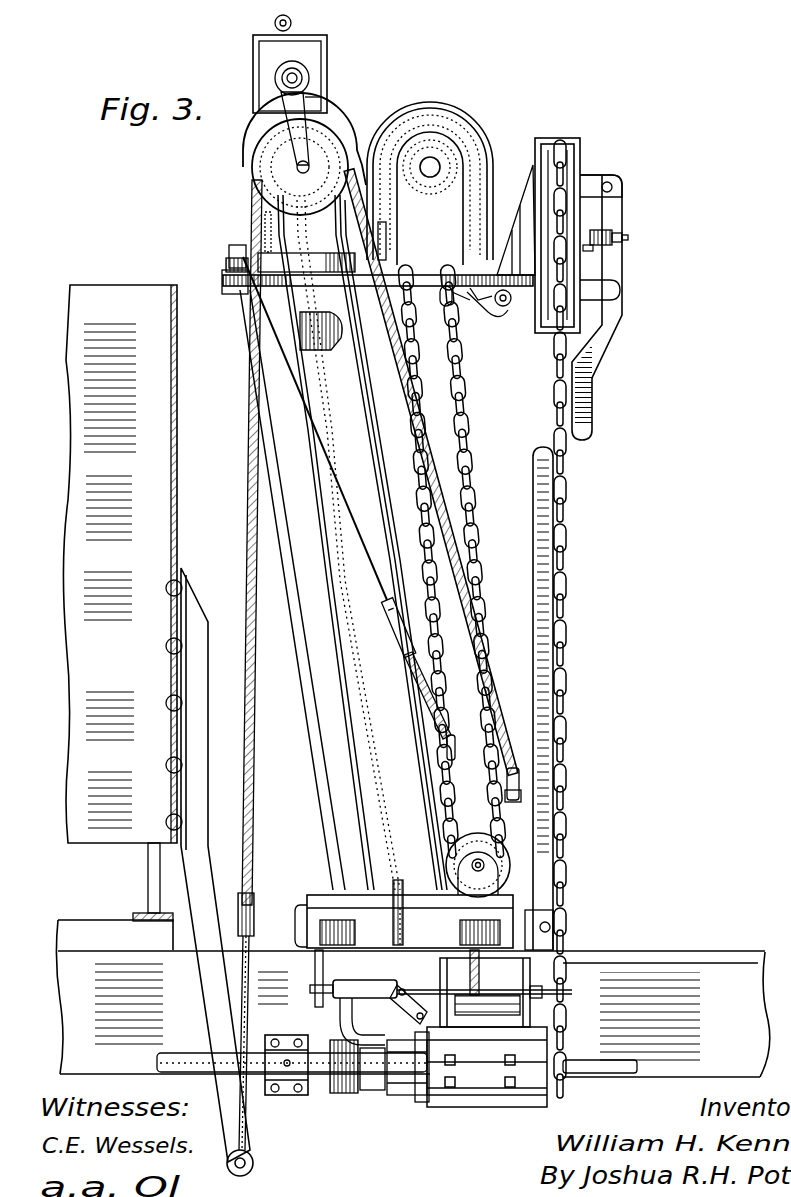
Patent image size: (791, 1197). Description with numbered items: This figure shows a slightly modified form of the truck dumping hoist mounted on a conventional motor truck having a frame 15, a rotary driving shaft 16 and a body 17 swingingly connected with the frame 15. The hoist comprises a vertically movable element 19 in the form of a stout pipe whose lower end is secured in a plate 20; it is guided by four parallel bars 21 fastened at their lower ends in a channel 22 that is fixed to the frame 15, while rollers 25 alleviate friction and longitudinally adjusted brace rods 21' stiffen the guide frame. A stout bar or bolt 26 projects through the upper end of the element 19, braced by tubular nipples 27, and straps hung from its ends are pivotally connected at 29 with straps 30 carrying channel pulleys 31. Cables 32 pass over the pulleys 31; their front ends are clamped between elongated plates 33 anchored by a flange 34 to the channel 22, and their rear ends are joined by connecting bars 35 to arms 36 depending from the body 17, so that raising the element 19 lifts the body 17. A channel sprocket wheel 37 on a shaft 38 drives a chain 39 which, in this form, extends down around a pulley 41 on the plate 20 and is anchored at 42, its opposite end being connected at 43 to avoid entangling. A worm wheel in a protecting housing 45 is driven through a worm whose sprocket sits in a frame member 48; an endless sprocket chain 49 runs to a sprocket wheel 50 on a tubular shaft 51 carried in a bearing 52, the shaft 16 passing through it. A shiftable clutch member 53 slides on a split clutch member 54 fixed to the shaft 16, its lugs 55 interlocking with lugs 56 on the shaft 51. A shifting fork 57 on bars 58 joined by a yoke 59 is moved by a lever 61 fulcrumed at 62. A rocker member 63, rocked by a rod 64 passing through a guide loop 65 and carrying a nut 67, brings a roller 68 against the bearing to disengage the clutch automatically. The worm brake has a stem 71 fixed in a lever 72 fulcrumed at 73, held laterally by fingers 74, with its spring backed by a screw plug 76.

The frame 15 is at (680, 963).
The rotary driving shaft 16 is at (155, 1052).
The body 17 is at (172, 378).
The vertically movable element 19 is at (362, 418).
The plate 20 is at (410, 921).
The bars 21 is at (355, 587).
The brace rods 21' is at (424, 581).
The channel 22 is at (300, 916).
The rollers 25 is at (378, 261).
The bar or bolt 26 is at (295, 78).
The tubular nipples 27 is at (309, 78).
The pivotal connection 29 is at (322, 97).
The straps 30 is at (305, 136).
The channel pulleys 31 is at (255, 180).
The cables 32 is at (252, 216).
The elongated plates 33 is at (512, 772).
The plate or flange 34 is at (512, 862).
The connecting bars 35 is at (248, 1005).
The arms 36 is at (205, 888).
The channel sprocket wheel 37 is at (447, 120).
The shaft 38 is at (436, 162).
The chain 39 is at (418, 361).
The pulley 41 is at (495, 850).
The chain anchorage 42 is at (446, 300).
The chain connection 43 is at (505, 306).
The protecting housing 45 is at (445, 104).
The frame member 48 is at (580, 143).
The endless sprocket chain 49 is at (568, 468).
The sprocket wheel 50 is at (567, 1046).
The tubular shaft 51 is at (422, 1100).
The bearing 52 is at (478, 1065).
The clutch member 53 is at (342, 1094).
The split clutch member 54 is at (290, 1096).
The lugs 55 is at (372, 1091).
The lugs 56 is at (402, 1096).
The shifting fork 57 is at (365, 990).
The bars 58 is at (319, 1005).
The block or yoke 59 is at (487, 1005).
The lever 61 is at (560, 985).
The fulcrum 62 is at (551, 927).
The rocker member 63 is at (364, 1021).
The rod 64 is at (368, 690).
The guide loop 65 is at (398, 880).
The nut 67 is at (338, 345).
The roller 68 is at (412, 1022).
The stem 71 is at (629, 238).
The lever 72 is at (615, 268).
The fulcrum 73 is at (614, 186).
The fingers 74 is at (621, 290).
The screw plug 76 is at (258, 240).